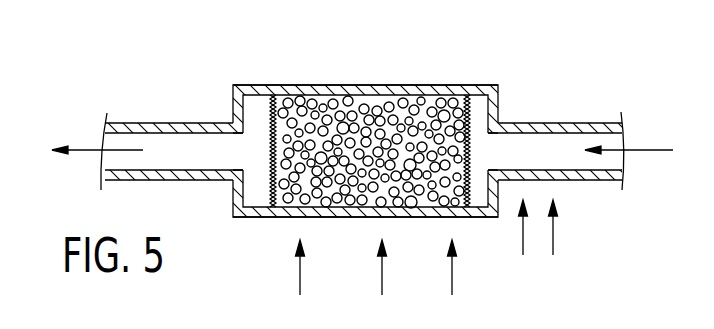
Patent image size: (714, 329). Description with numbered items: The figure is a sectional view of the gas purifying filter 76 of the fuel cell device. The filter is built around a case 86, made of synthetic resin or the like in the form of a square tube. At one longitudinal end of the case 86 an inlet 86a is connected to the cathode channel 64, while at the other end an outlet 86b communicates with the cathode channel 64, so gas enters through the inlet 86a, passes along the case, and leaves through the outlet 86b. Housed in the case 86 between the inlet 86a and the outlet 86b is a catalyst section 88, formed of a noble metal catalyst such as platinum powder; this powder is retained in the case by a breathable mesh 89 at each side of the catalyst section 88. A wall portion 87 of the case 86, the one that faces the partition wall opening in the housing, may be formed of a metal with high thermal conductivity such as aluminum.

The gas purifying filter 76 is at (398, 69).
The cathode channel 64 is at (597, 122).
The case 86 is at (273, 86).
The inlet 86a is at (487, 152).
The outlet 86b is at (243, 153).
The wall portion 87 is at (351, 219).
The catalyst section 88 is at (319, 100).
The breathable mesh 89 is at (474, 94).